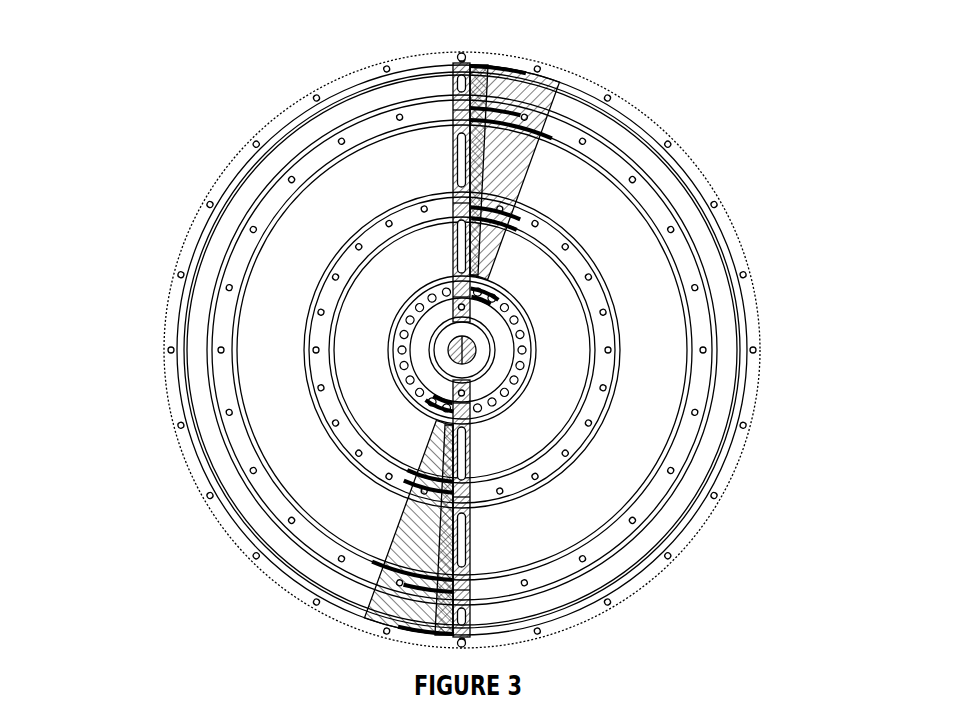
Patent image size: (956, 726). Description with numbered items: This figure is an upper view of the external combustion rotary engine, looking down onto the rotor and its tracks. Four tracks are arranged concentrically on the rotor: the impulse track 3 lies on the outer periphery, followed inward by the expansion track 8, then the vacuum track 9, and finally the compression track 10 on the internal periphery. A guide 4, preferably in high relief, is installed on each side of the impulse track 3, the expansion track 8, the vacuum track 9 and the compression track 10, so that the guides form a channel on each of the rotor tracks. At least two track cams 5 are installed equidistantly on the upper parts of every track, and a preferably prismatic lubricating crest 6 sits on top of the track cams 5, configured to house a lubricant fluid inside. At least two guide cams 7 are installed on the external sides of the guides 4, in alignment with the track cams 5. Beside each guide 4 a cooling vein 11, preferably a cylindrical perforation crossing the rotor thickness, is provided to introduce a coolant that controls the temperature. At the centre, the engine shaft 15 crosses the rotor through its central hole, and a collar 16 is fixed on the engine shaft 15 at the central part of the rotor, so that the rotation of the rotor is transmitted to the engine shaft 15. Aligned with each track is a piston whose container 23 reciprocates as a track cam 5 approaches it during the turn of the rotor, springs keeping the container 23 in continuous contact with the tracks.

The impulse track 3 is at (230, 215).
The guide 4 is at (607, 405).
The track cams 5 is at (497, 100).
The lubricating crest 6 is at (473, 268).
The guide cams 7 is at (504, 130).
The expansion track 8 is at (307, 237).
The vacuum track 9 is at (380, 280).
The compression track 10 is at (427, 273).
The cooling vein 11 is at (398, 352).
The engine shaft 15 is at (452, 347).
The collar 16 is at (488, 342).
The container 23 is at (460, 53).